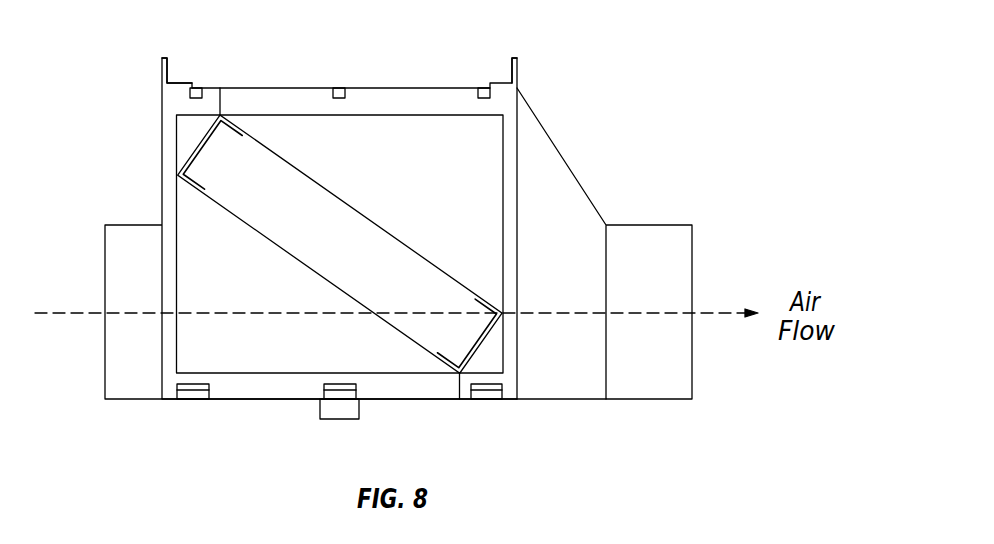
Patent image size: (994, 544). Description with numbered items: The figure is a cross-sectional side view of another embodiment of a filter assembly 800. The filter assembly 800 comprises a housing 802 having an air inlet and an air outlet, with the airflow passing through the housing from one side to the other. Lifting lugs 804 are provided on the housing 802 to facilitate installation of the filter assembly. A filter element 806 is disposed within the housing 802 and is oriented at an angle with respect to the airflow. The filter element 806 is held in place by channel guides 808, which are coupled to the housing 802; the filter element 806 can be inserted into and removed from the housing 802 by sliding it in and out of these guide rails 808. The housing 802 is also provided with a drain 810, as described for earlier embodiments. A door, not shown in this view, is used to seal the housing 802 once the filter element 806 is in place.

The filter assembly 800 is at (708, 52).
The housing 802 is at (563, 157).
The lifting lugs 804 is at (160, 72).
The filter element 806 is at (258, 187).
The channel guides 808 is at (193, 143).
The drain 810 is at (338, 420).